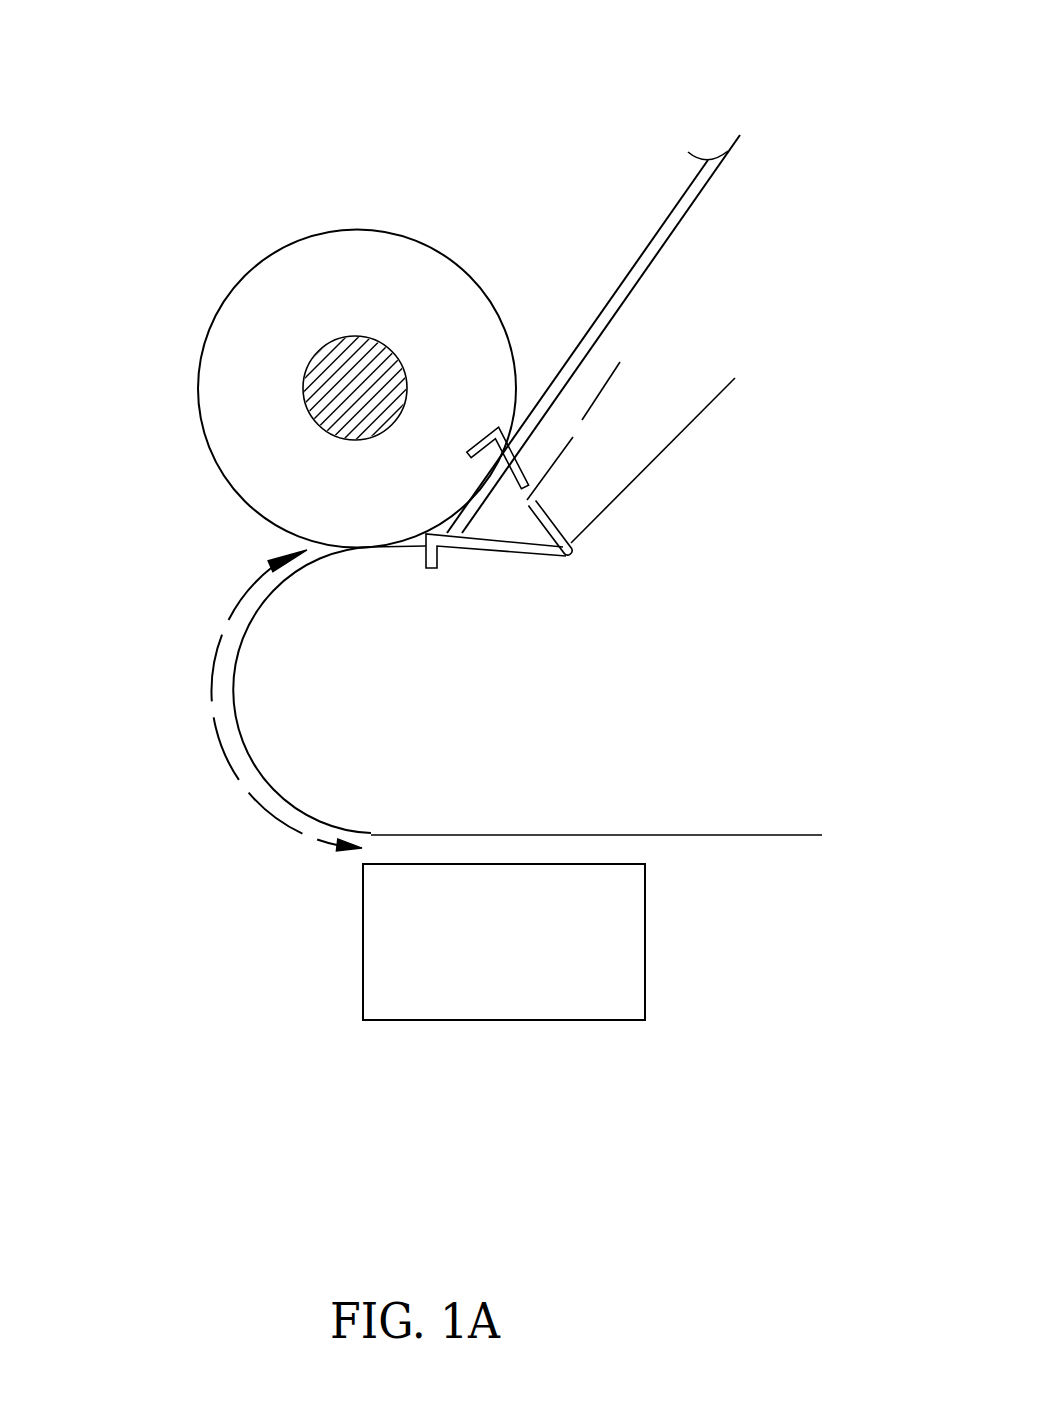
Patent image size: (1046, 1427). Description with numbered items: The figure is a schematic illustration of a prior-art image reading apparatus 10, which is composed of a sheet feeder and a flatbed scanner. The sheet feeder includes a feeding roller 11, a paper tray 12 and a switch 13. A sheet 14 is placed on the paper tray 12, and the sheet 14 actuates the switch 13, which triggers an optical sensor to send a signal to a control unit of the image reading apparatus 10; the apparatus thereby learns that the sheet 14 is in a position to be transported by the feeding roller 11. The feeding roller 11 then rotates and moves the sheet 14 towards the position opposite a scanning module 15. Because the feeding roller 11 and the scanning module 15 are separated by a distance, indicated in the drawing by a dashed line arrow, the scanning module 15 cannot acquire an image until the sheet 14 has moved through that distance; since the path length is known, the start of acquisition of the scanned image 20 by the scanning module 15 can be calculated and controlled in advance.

The image reading apparatus 10 is at (505, 240).
The feeding roller 11 is at (283, 277).
The paper tray 12 is at (657, 475).
The switch 13 is at (633, 350).
The sheet 14 is at (686, 190).
The scanning module 15 is at (373, 952).
The scanned image 20 is at (507, 888).